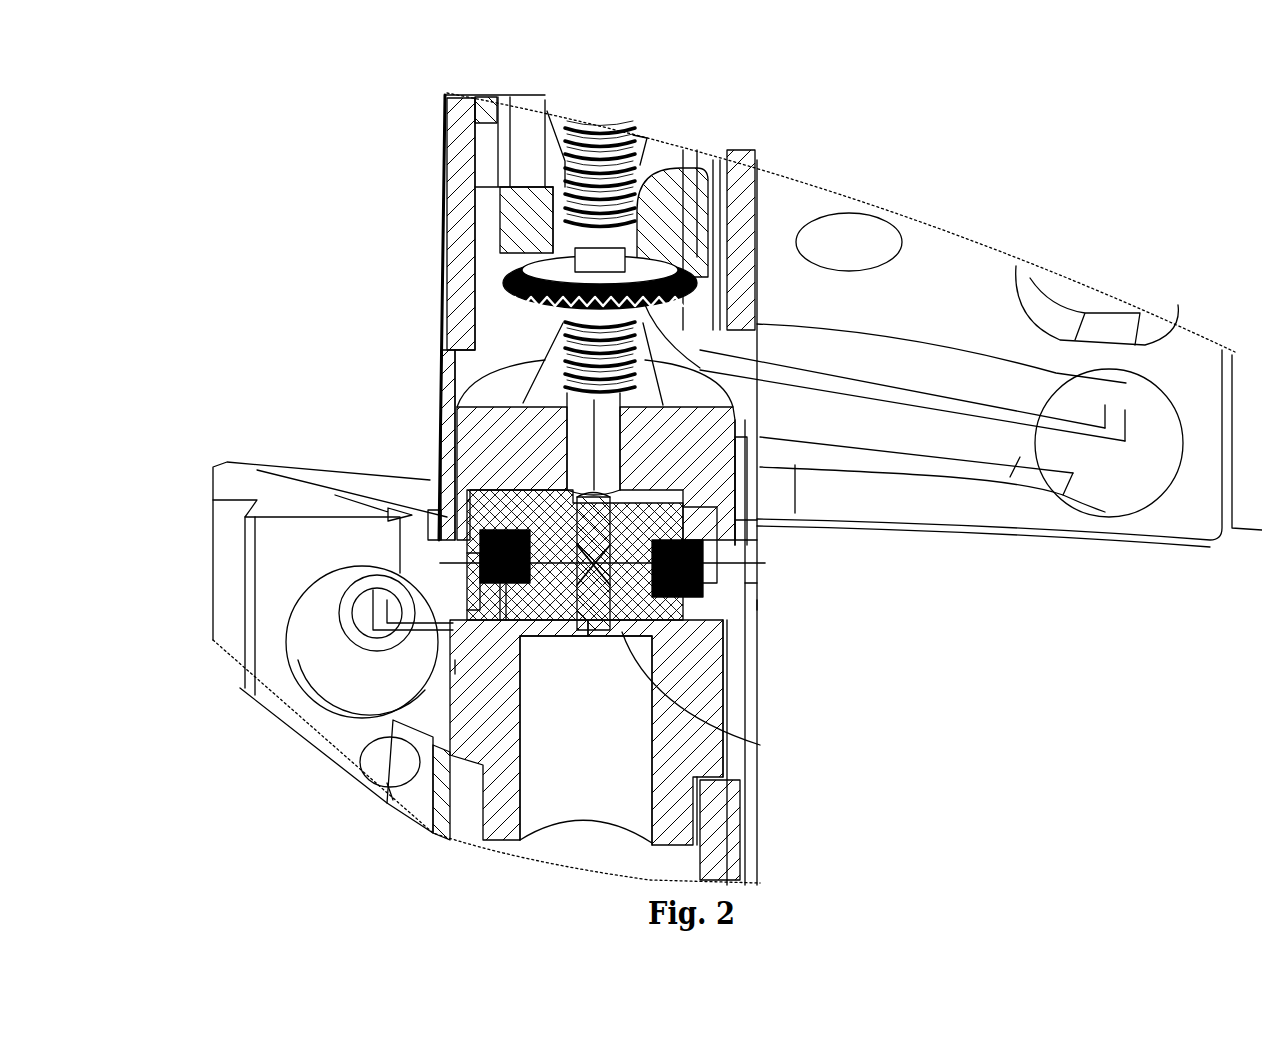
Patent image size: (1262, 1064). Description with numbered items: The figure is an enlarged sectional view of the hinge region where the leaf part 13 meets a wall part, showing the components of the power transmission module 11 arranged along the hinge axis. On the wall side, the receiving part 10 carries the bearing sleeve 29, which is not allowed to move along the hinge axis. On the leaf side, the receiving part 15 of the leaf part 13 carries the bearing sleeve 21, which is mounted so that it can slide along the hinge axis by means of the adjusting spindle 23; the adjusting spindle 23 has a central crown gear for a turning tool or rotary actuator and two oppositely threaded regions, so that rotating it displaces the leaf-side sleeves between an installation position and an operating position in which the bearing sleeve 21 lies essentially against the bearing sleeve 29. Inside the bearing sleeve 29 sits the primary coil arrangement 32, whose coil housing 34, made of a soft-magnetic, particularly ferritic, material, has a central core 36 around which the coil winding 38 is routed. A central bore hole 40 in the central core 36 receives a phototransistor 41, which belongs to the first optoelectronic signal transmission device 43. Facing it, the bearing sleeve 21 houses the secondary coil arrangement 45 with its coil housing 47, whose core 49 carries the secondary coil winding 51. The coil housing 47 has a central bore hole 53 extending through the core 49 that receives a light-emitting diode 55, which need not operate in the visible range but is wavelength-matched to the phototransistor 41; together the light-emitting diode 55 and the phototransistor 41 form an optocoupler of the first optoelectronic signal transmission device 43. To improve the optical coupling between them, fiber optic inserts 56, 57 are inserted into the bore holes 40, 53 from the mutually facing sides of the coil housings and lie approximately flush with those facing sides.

The receiving part 10 is at (760, 814).
The power transmission module 11 is at (838, 594).
The leaf part 13 is at (1021, 211).
The receiving part 15 is at (400, 293).
The bearing sleeve 21 is at (500, 440).
The adjusting spindle 23 is at (587, 252).
The bearing sleeve 29 is at (742, 706).
The primary coil arrangement 32 is at (742, 622).
The coil housing 34 is at (742, 652).
The central core 36 is at (415, 566).
The coil winding 38 is at (760, 583).
The central bore hole 40 is at (440, 586).
The phototransistor 41 is at (455, 667).
The first optoelectronic signal transmission device 43 is at (430, 480).
The secondary coil arrangement 45 is at (570, 503).
The coil housing 47 is at (585, 497).
The core 49 is at (750, 540).
The secondary coil winding 51 is at (437, 483).
The central bore hole 53 is at (760, 490).
The light-emitting diode 55 is at (628, 492).
The fiber optic insert 56 is at (760, 518).
The fiber optic insert 57 is at (742, 738).